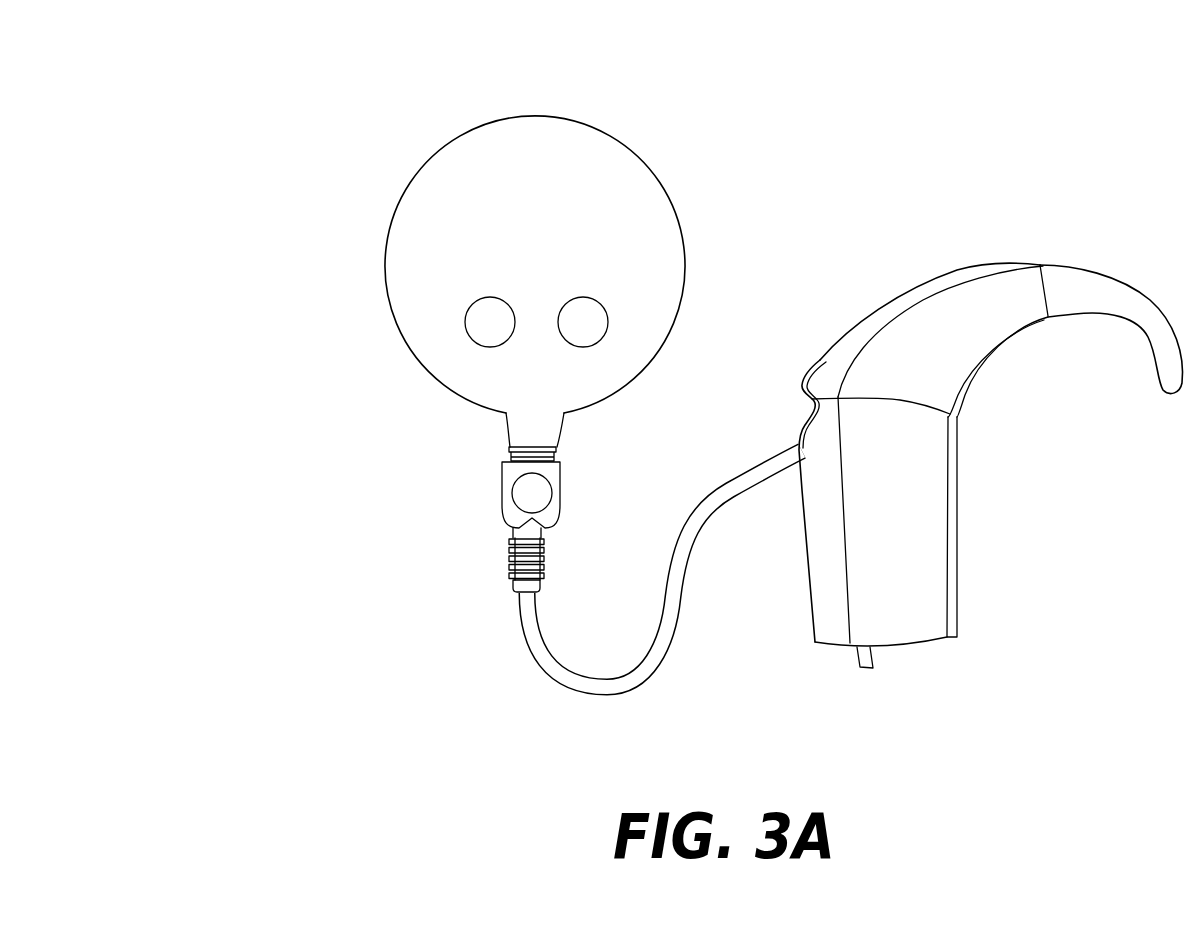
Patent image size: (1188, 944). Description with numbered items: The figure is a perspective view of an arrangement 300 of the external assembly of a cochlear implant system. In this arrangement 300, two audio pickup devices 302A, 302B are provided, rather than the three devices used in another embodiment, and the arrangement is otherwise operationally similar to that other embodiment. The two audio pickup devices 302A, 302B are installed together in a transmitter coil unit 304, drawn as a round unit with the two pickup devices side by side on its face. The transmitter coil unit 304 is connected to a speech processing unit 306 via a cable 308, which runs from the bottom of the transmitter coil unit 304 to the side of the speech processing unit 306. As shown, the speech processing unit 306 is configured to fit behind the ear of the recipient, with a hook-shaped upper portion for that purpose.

The arrangement 300 is at (254, 61).
The audio pickup device 302A is at (490, 308).
The audio pickup device 302B is at (585, 308).
The transmitter coil unit 304 is at (603, 129).
The speech processing unit 306 is at (923, 622).
The cable 308 is at (644, 681).